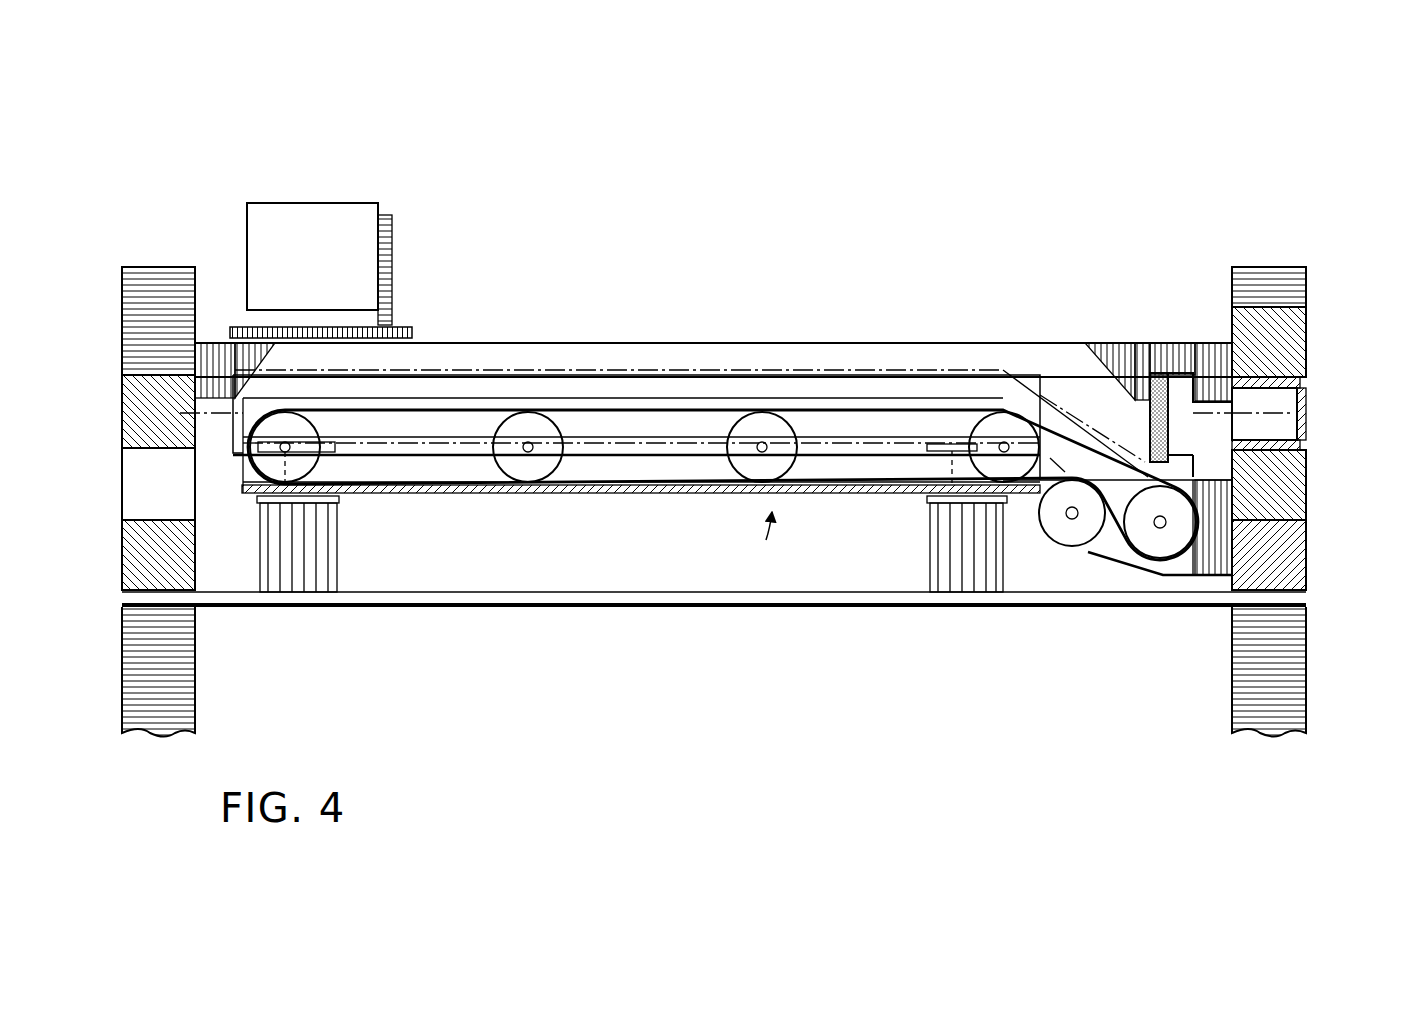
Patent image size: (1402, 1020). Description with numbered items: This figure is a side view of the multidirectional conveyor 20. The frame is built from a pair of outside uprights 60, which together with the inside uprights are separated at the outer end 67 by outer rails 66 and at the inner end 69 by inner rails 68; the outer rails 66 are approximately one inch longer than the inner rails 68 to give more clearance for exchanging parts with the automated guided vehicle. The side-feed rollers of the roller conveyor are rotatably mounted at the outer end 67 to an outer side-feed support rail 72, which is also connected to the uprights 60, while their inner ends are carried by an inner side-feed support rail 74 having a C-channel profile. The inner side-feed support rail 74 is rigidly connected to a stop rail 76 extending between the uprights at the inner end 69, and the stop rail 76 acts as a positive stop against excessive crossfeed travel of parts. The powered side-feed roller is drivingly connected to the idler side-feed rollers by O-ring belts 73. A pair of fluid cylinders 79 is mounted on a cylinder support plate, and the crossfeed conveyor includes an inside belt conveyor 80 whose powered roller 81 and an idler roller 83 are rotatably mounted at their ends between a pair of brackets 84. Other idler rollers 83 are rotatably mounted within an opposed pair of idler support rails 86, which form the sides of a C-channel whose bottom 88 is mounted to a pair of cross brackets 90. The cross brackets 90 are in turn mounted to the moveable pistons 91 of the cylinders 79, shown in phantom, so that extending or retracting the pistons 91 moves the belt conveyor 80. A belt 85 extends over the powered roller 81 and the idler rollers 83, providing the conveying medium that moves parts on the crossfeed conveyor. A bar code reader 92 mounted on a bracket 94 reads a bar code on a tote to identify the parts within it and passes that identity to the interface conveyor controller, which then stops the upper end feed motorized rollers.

The multidirectional conveyor 20 is at (765, 125).
The outside uprights 60 is at (122, 660).
The outer rails 66 is at (122, 546).
The outer end 67 is at (123, 250).
The inner rails 68 is at (1306, 553).
The inner end 69 is at (1302, 242).
The outer side-feed support rail 72 is at (122, 420).
The O-ring belts 73 is at (1150, 390).
The inner side-feed support rail 74 is at (1306, 410).
The stop rail 76 is at (1306, 338).
The fluid cylinders 79 is at (338, 563).
The inside belt conveyor 80 is at (761, 538).
The powered roller 81 is at (1157, 473).
The idler roller 83 is at (262, 466).
The brackets 84 is at (1183, 576).
The belt 85 is at (676, 408).
The idler support rails 86 is at (1003, 400).
The bottom 88 is at (612, 497).
The cross brackets 90 is at (300, 483).
The pistons 91 is at (336, 483).
The bar code reader 92 is at (318, 203).
The bracket 94 is at (410, 327).